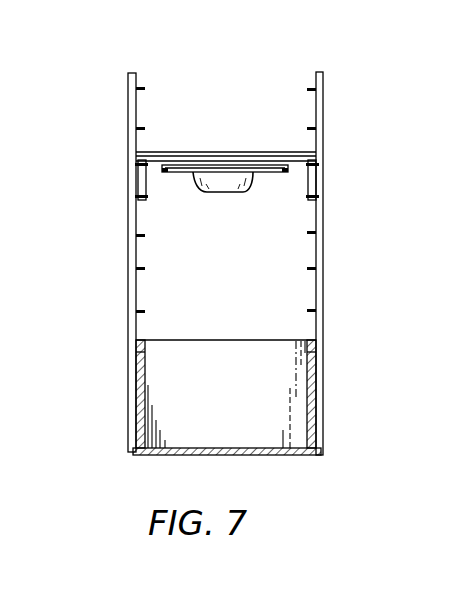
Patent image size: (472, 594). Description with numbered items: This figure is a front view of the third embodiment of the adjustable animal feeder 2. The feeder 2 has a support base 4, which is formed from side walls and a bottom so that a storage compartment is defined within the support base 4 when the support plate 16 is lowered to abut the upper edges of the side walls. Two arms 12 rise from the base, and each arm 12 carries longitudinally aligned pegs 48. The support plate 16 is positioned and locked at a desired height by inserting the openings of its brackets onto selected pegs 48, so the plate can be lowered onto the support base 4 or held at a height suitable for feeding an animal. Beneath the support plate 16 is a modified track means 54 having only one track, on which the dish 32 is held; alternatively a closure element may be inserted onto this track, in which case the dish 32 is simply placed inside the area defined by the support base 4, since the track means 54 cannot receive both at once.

The adjustable animal feeder 2 is at (118, 207).
The support base 4 is at (300, 397).
The arm 12 is at (130, 270).
The support plate 16 is at (173, 152).
The dish 32 is at (258, 177).
The peg 48 is at (143, 129).
The modified track means 54 is at (322, 177).